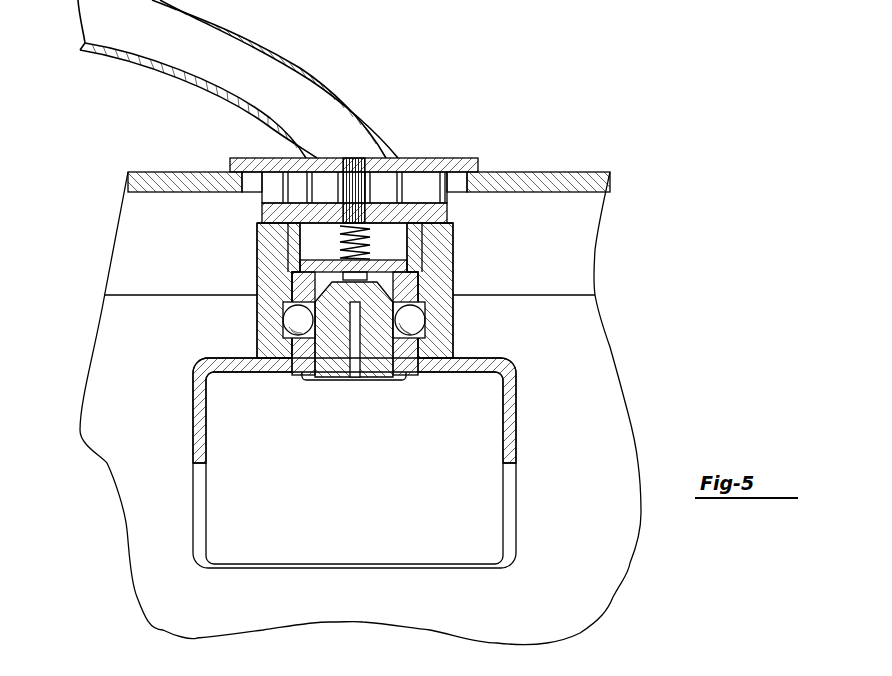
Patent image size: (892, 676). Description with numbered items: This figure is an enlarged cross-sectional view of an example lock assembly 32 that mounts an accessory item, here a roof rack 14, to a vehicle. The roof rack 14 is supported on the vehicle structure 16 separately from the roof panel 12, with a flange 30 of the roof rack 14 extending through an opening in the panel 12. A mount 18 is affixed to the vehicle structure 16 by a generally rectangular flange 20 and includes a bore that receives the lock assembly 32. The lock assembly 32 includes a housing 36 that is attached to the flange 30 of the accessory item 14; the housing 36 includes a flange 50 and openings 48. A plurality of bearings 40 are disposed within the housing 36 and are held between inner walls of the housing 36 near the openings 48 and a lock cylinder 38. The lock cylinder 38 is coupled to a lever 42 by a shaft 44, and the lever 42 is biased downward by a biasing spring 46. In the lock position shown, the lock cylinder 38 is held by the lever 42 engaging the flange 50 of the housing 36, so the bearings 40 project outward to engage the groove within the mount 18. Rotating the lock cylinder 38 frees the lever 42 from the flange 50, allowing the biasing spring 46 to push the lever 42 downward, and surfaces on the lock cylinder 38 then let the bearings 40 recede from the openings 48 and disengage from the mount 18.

The roof panel 12 is at (573, 257).
The roof rack 14 is at (290, 60).
The vehicle structure 16 is at (580, 408).
The mount 18 is at (245, 315).
The flange 20 is at (442, 518).
The flange 30 is at (440, 158).
The lock assembly 32 is at (421, 277).
The housing 36 is at (297, 240).
The lock cylinder 38 is at (336, 353).
The bearings 40 is at (412, 321).
The lever 42 is at (310, 263).
The shaft 44 is at (350, 185).
The biasing spring 46 is at (375, 250).
The openings 48 is at (292, 337).
The flange 50 is at (407, 290).